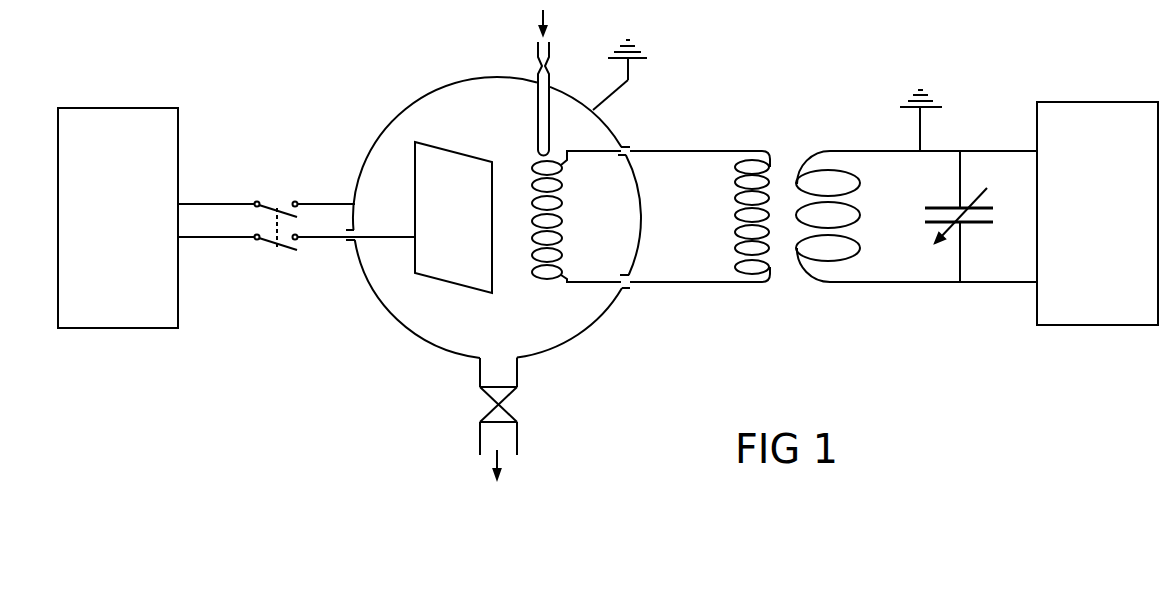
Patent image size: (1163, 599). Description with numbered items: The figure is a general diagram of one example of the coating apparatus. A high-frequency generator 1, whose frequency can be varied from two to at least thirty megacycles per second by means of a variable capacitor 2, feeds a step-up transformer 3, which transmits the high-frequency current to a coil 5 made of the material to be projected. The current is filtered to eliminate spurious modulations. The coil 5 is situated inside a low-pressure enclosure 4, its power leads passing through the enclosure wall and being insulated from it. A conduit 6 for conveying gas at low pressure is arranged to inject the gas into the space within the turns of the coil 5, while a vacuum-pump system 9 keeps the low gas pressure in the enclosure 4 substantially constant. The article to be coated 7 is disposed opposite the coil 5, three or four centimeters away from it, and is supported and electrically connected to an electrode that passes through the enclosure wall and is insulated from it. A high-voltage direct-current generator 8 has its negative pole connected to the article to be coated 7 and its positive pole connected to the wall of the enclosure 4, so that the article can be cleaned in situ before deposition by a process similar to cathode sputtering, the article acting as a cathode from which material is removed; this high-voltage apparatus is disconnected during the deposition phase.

The high-frequency generator 1 is at (1101, 207).
The variable capacitor 2 is at (952, 207).
The step-up transformer 3 is at (791, 152).
The low-pressure enclosure 4 is at (398, 323).
The coil 5 is at (540, 275).
The conduit 6 is at (540, 100).
The article to be coated 7 is at (451, 165).
The high-voltage direct-current generator 8 is at (121, 233).
The vacuum-pump system 9 is at (498, 429).